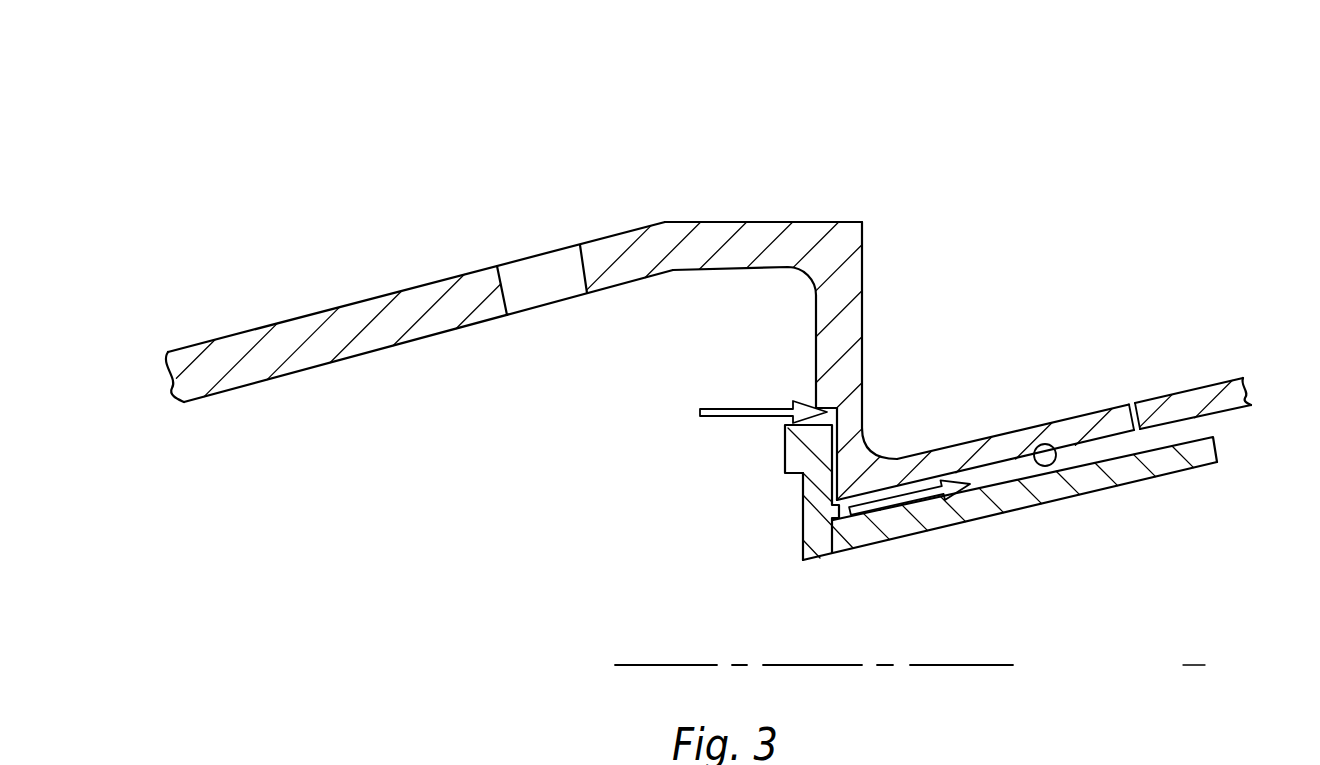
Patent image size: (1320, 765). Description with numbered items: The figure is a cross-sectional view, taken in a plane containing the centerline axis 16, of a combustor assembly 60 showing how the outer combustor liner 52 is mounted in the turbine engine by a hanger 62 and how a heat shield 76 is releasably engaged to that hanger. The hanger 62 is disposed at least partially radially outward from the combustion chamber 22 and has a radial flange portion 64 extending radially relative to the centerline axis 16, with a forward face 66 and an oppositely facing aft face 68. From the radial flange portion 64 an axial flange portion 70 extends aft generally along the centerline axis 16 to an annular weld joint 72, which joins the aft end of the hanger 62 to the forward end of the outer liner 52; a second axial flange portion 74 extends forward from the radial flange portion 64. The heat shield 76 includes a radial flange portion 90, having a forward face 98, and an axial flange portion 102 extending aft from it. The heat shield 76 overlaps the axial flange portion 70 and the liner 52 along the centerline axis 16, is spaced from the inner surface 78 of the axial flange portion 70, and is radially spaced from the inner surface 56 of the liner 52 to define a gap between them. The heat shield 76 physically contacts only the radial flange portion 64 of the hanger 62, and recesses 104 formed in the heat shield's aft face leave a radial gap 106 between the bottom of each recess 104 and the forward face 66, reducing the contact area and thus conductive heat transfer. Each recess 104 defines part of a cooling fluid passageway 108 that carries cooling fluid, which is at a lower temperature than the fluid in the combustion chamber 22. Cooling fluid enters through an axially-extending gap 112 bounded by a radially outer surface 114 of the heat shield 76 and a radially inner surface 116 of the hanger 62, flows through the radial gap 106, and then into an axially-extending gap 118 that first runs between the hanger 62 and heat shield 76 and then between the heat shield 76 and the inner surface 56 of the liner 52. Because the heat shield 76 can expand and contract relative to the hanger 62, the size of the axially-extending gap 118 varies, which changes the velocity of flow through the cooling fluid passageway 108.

The centerline axis 16 is at (703, 665).
The combustion chamber 22 is at (1194, 653).
The outer combustor liner 52 is at (1177, 393).
The inner surface of the liner 56 is at (1238, 413).
The combustor assembly 60 is at (872, 103).
The hanger 62 is at (322, 288).
The radial flange portion 64 is at (842, 293).
The forward face 66 is at (813, 310).
The aft face 68 is at (863, 313).
The axial flange portion 70 is at (982, 452).
The annular weld joint 72 is at (1127, 400).
The second axial flange portion 74 is at (368, 301).
The heat shield 76 is at (997, 525).
The inner surface of the axial flange portion 78 is at (1043, 450).
The radial flange portion of the heat shield 90 is at (800, 523).
The forward face of the heat shield radial flange 98 is at (802, 537).
The axial flange portion of the heat shield 102 is at (1120, 490).
The recess 104 is at (827, 477).
The radial gap 106 is at (838, 447).
The cooling fluid passageway 108 is at (857, 530).
The axially-extending gap 112 is at (833, 410).
The radially outer surface 114 is at (790, 432).
The radially inner surface 116 is at (818, 410).
The axially-extending gap 118 is at (1080, 457).